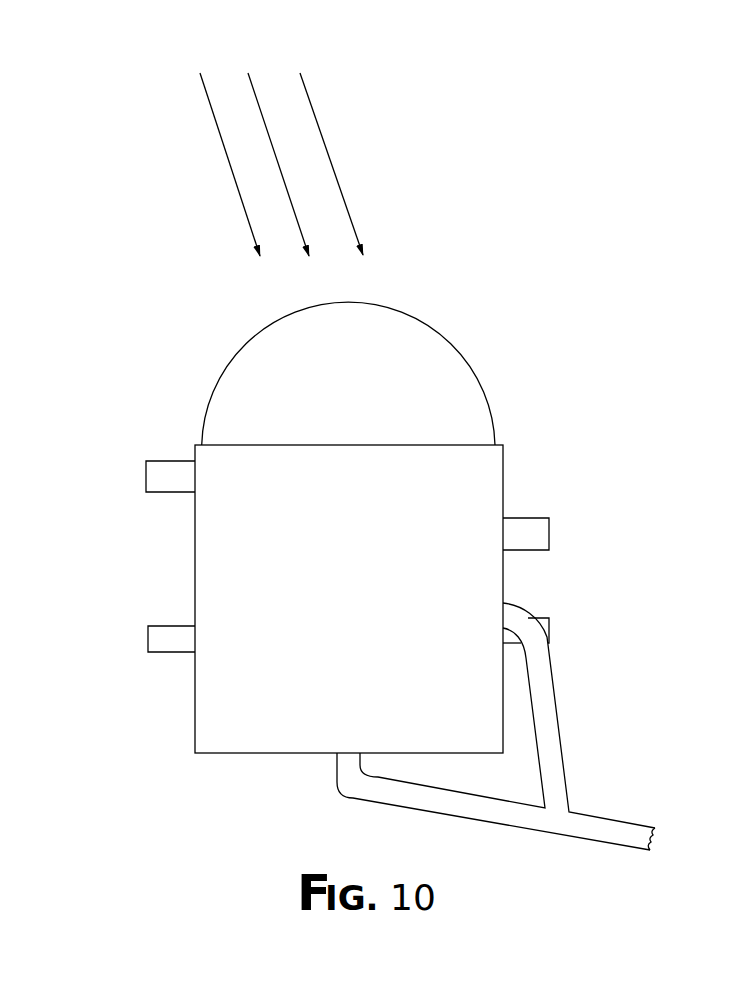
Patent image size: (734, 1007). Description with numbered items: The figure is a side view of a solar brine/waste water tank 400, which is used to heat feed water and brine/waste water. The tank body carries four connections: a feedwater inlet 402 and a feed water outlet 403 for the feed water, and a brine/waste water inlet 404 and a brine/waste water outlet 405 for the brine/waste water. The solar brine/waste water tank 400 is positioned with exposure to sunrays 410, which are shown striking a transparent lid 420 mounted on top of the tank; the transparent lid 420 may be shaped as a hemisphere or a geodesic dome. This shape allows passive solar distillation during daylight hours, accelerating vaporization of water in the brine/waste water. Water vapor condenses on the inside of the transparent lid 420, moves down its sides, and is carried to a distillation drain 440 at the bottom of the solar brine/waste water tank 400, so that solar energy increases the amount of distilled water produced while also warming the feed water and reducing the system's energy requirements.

The solar brine/waste water tank 400 is at (227, 753).
The feedwater inlet 402 is at (537, 518).
The feed water outlet 403 is at (165, 460).
The brine/waste water inlet 404 is at (552, 622).
The brine/waste water outlet 405 is at (162, 625).
The sunrays 410 is at (315, 112).
The transparent lid 420 is at (458, 347).
The distillation drain 440 is at (657, 842).